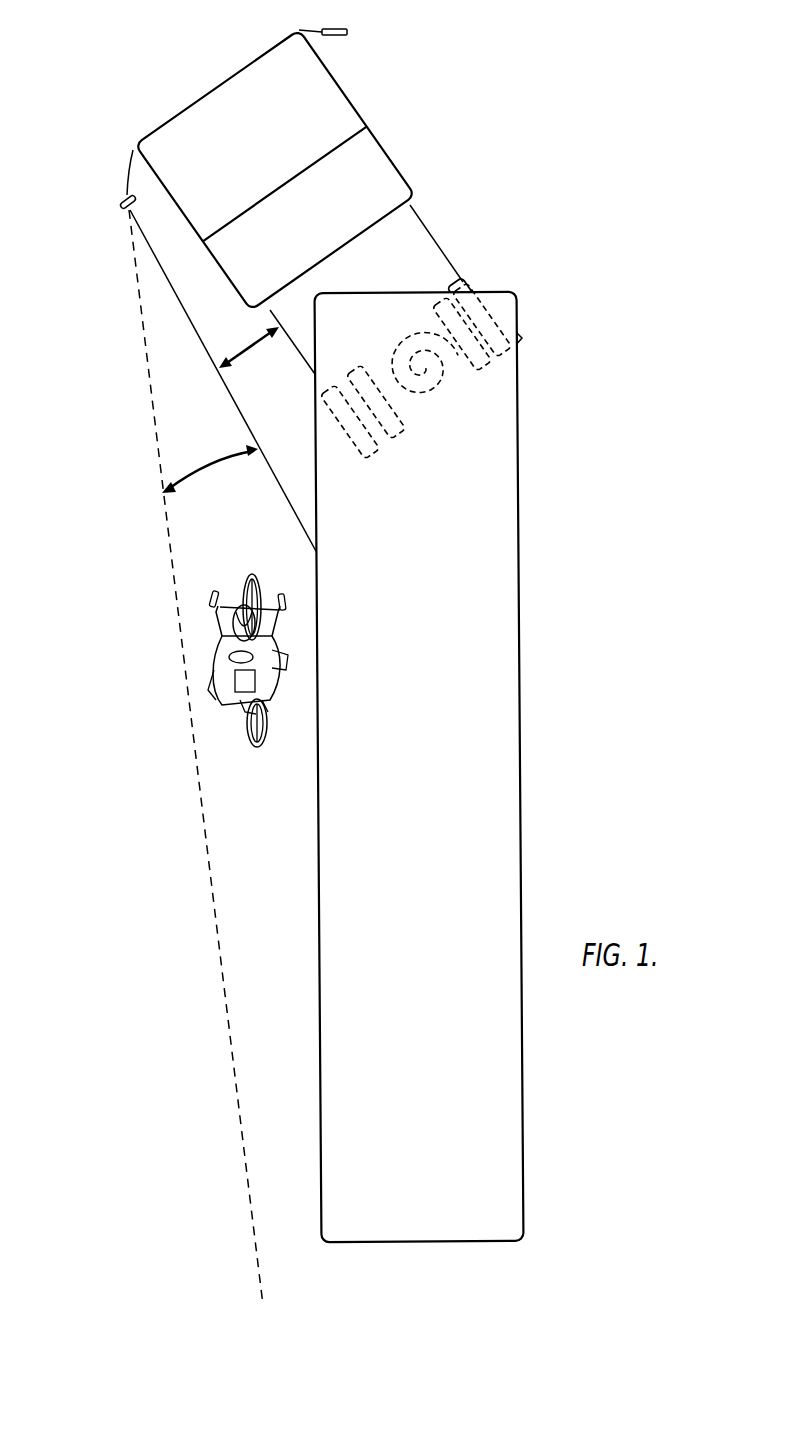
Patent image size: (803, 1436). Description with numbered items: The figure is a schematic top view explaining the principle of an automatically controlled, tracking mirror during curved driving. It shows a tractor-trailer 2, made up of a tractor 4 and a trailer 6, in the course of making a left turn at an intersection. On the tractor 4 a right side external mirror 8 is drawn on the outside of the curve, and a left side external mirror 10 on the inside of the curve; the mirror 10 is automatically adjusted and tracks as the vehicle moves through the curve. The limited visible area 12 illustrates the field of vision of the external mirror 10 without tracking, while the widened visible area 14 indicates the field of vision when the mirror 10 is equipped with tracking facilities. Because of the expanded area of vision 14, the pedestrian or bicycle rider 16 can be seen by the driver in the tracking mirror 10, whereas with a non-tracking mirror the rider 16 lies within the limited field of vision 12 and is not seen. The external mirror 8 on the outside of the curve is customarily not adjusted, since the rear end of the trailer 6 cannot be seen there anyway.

The tractor-trailer 2 is at (369, 652).
The tractor 4 is at (398, 163).
The trailer 6 is at (497, 782).
The right side external mirror 8 is at (330, 28).
The left side external mirror 10 is at (120, 202).
The limited visible area 12 is at (250, 343).
The widened visible area 14 is at (207, 477).
The pedestrian or bicycle rider 16 is at (217, 667).